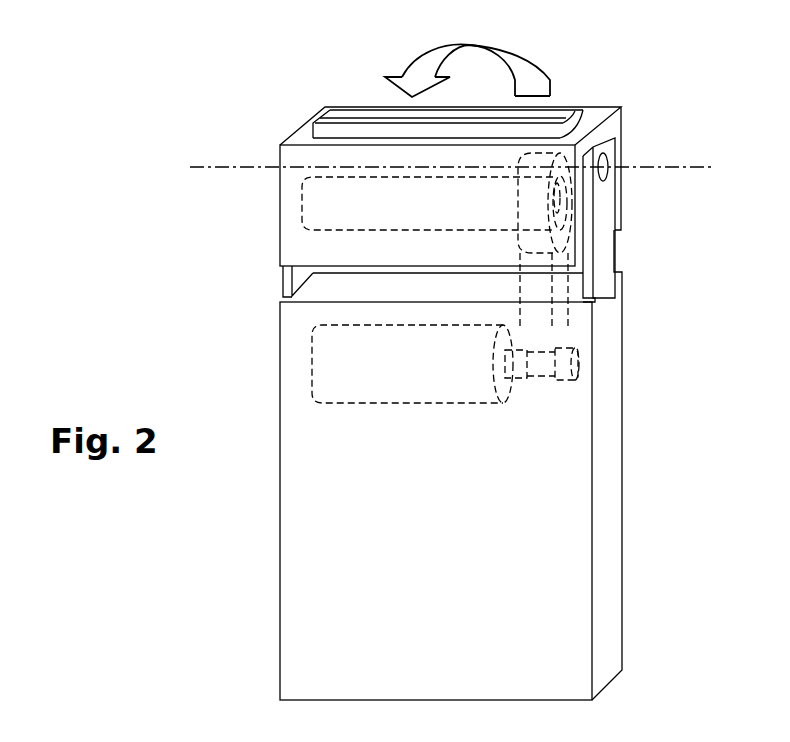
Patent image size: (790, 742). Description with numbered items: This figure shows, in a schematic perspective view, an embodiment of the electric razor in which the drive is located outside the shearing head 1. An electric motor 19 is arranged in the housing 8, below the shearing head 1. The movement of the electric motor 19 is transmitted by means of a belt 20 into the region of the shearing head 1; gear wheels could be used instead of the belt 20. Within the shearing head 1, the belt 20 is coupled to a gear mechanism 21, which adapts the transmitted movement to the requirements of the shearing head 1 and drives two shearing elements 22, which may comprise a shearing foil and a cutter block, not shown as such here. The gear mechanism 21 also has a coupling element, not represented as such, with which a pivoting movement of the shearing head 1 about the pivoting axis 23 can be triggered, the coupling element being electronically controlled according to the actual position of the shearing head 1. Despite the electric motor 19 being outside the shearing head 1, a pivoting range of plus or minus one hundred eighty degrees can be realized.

The shearing head 1 is at (303, 133).
The housing 8 is at (558, 522).
The electric motor 19 is at (325, 367).
The belt 20 is at (540, 323).
The gear mechanism 21 is at (318, 207).
The shearing elements 22 is at (542, 130).
The pivoting axis 23 is at (673, 167).